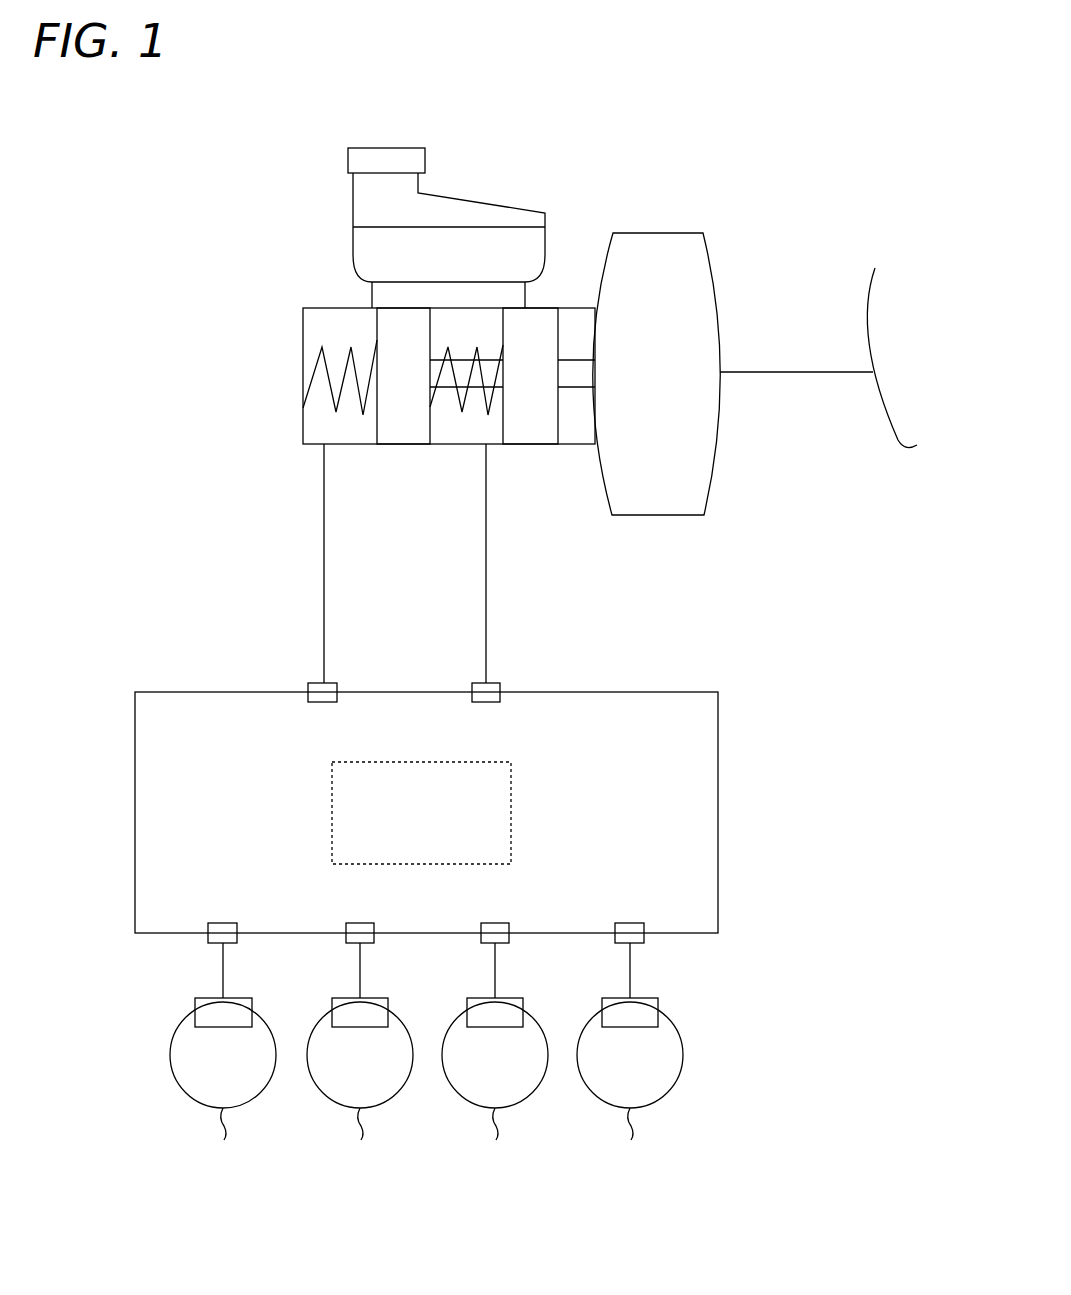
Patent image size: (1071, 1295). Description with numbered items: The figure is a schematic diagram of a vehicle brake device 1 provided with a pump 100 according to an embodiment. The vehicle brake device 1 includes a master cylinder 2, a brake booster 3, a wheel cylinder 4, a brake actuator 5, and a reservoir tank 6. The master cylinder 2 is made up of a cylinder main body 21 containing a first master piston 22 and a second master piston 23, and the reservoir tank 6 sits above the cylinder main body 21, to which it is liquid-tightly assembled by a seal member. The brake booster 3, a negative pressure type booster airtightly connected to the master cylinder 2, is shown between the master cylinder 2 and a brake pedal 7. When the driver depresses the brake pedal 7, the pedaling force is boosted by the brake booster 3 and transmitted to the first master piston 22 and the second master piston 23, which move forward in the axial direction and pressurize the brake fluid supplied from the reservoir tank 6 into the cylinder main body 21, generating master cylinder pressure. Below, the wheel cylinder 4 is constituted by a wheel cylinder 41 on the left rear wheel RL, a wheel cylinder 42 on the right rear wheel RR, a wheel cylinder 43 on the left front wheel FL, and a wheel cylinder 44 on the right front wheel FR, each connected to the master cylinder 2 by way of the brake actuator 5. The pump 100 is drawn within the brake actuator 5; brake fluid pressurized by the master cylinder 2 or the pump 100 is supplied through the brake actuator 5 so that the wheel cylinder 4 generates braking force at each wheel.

The vehicle brake device 1 is at (838, 158).
The master cylinder 2 is at (308, 275).
The brake booster 3 is at (670, 232).
The wheel cylinder 4 is at (120, 977).
The brake actuator 5 is at (674, 692).
The reservoir tank 6 is at (475, 203).
The brake pedal 7 is at (913, 427).
The cylinder main body 21 is at (303, 386).
The first master piston 22 is at (538, 446).
The second master piston 23 is at (402, 446).
The wheel cylinder 41 is at (207, 998).
The wheel cylinder 42 is at (347, 998).
The wheel cylinder 43 is at (480, 998).
The wheel cylinder 44 is at (615, 998).
The pump 100 is at (482, 762).